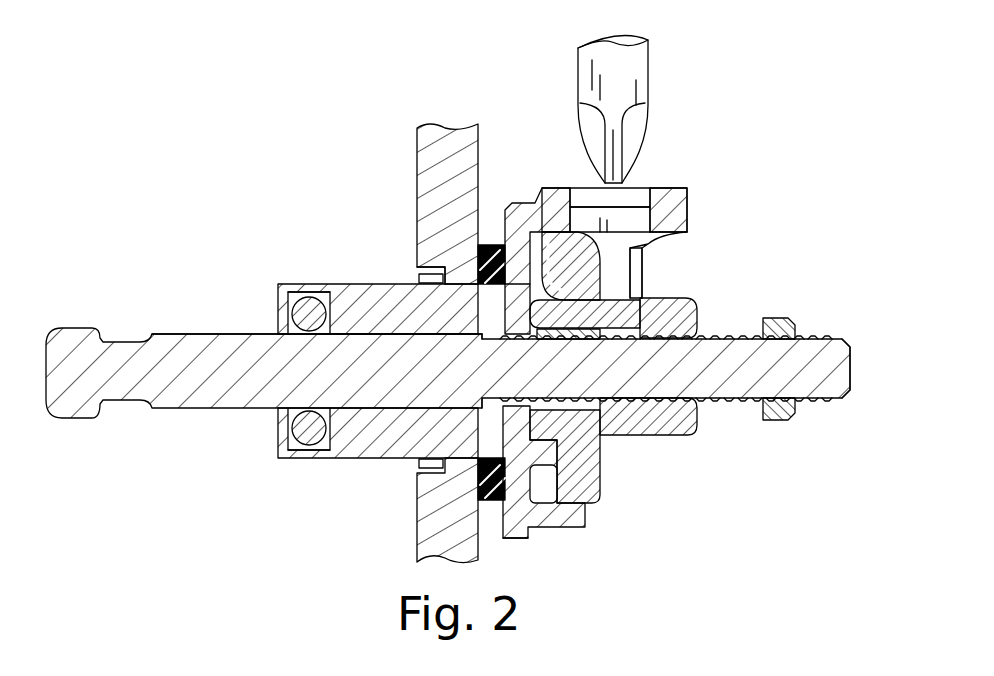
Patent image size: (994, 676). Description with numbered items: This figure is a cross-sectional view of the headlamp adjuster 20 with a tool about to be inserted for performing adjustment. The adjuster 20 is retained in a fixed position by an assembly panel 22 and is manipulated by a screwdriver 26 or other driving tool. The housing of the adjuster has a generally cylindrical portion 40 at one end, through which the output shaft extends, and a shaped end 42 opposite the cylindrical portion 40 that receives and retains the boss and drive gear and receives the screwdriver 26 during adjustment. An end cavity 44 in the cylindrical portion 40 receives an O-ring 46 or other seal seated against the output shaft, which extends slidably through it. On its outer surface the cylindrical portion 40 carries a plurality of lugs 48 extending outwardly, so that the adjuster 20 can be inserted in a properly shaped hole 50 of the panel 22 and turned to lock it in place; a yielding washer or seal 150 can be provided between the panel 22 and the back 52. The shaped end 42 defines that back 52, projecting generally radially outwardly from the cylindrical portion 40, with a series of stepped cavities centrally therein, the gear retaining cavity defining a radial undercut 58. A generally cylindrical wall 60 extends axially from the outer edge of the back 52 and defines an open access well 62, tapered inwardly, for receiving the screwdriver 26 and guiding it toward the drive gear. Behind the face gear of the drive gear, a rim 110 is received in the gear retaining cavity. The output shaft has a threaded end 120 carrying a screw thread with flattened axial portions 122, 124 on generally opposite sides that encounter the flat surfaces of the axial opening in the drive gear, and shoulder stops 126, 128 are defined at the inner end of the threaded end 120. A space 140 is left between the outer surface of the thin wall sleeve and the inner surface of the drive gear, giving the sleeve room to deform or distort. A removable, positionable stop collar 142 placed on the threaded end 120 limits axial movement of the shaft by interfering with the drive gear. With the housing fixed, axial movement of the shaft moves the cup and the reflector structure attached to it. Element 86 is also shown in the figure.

The headlamp adjuster 20 is at (326, 208).
The assembly panel 22 is at (427, 163).
The screwdriver 26 is at (635, 80).
The cylindrical portion 40 is at (337, 290).
The shaped end 42 is at (563, 540).
The end cavity 44 is at (327, 450).
The O-ring 46 is at (302, 428).
The lugs 48 is at (433, 280).
The hole 50 is at (417, 273).
The back 52 is at (518, 210).
The radial undercut 58 is at (542, 290).
The cylindrical wall 60 is at (683, 205).
The access well 62 is at (650, 195).
The sleeve 86 is at (510, 340).
The rim 110 is at (633, 275).
The threaded end 120 is at (725, 375).
The flattened axial portion 122 is at (810, 338).
The flattened axial portion 124 is at (815, 398).
The shoulder stop 126 is at (472, 347).
The shoulder stop 128 is at (482, 402).
The space 140 is at (655, 434).
The stop collar 142 is at (777, 318).
The washer 150 is at (473, 482).